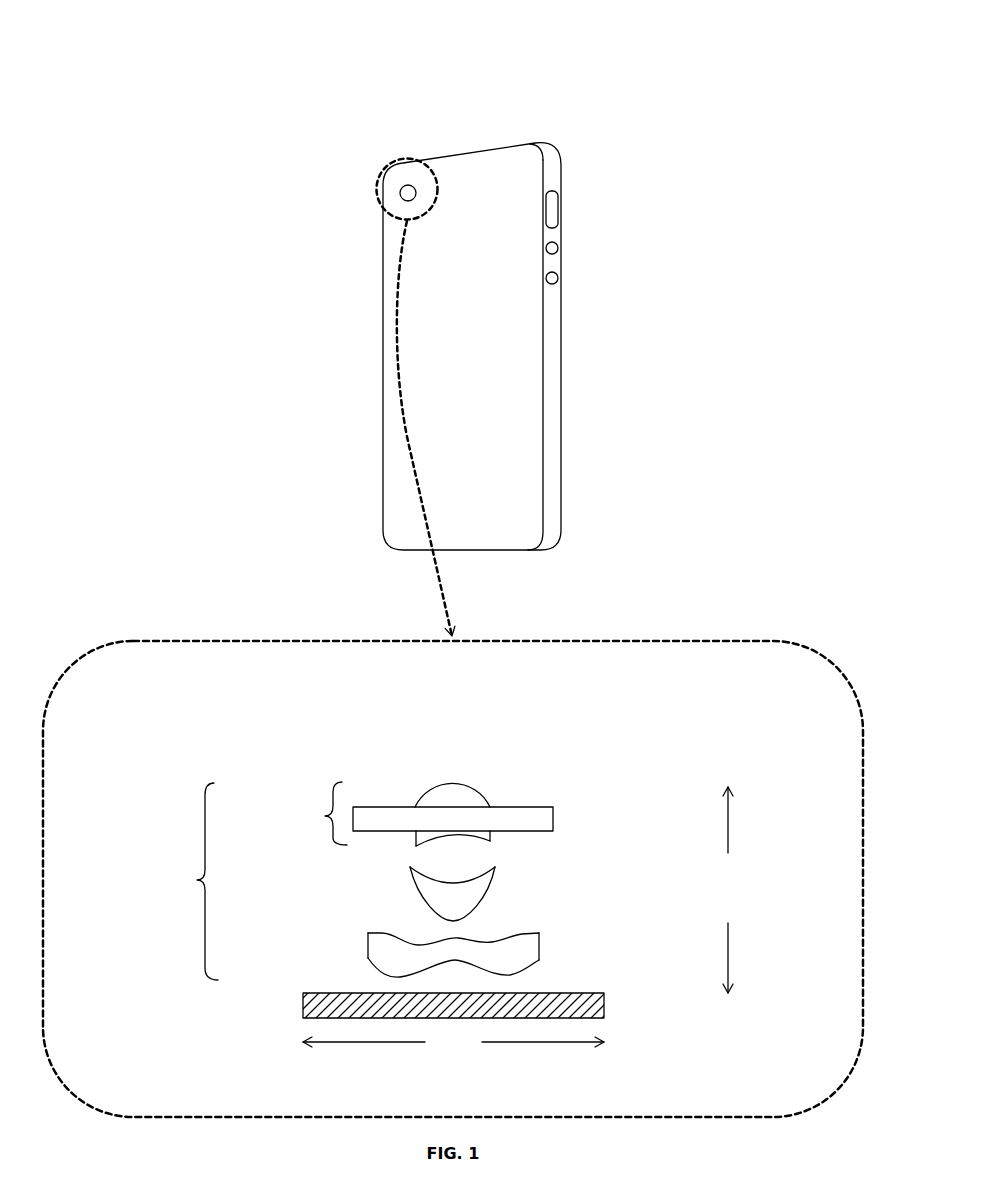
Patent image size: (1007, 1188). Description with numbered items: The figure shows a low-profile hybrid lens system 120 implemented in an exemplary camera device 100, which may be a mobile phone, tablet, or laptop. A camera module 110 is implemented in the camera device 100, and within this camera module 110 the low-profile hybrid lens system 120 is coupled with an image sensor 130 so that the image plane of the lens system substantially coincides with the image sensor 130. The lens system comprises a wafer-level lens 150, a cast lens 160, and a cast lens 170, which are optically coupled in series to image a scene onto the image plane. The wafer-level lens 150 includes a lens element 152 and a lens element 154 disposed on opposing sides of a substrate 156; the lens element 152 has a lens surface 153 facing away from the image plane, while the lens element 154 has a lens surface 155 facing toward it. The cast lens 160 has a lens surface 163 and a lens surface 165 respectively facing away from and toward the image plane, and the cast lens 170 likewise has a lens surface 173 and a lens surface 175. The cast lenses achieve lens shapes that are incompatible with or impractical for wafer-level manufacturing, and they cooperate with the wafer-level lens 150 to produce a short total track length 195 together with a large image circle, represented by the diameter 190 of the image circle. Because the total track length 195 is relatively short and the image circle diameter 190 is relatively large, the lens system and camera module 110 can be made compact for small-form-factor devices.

The camera device 100 is at (490, 120).
The camera module 110 is at (393, 178).
The low-profile hybrid lens system 120 is at (197, 880).
The image sensor 130 is at (604, 1008).
The wafer-level lens 150 is at (325, 816).
The lens element 152 is at (486, 765).
The lens surface 153 is at (413, 789).
The lens element 154 is at (524, 837).
The lens surface 155 is at (478, 846).
The substrate 156 is at (453, 819).
The cast lens 160 is at (413, 889).
The lens surface 163 is at (460, 880).
The lens surface 165 is at (496, 900).
The cast lens 170 is at (414, 945).
The lens surface 173 is at (508, 936).
The lens surface 175 is at (539, 963).
The diameter of the image circle 190 is at (453, 1042).
The total track length 195 is at (728, 890).